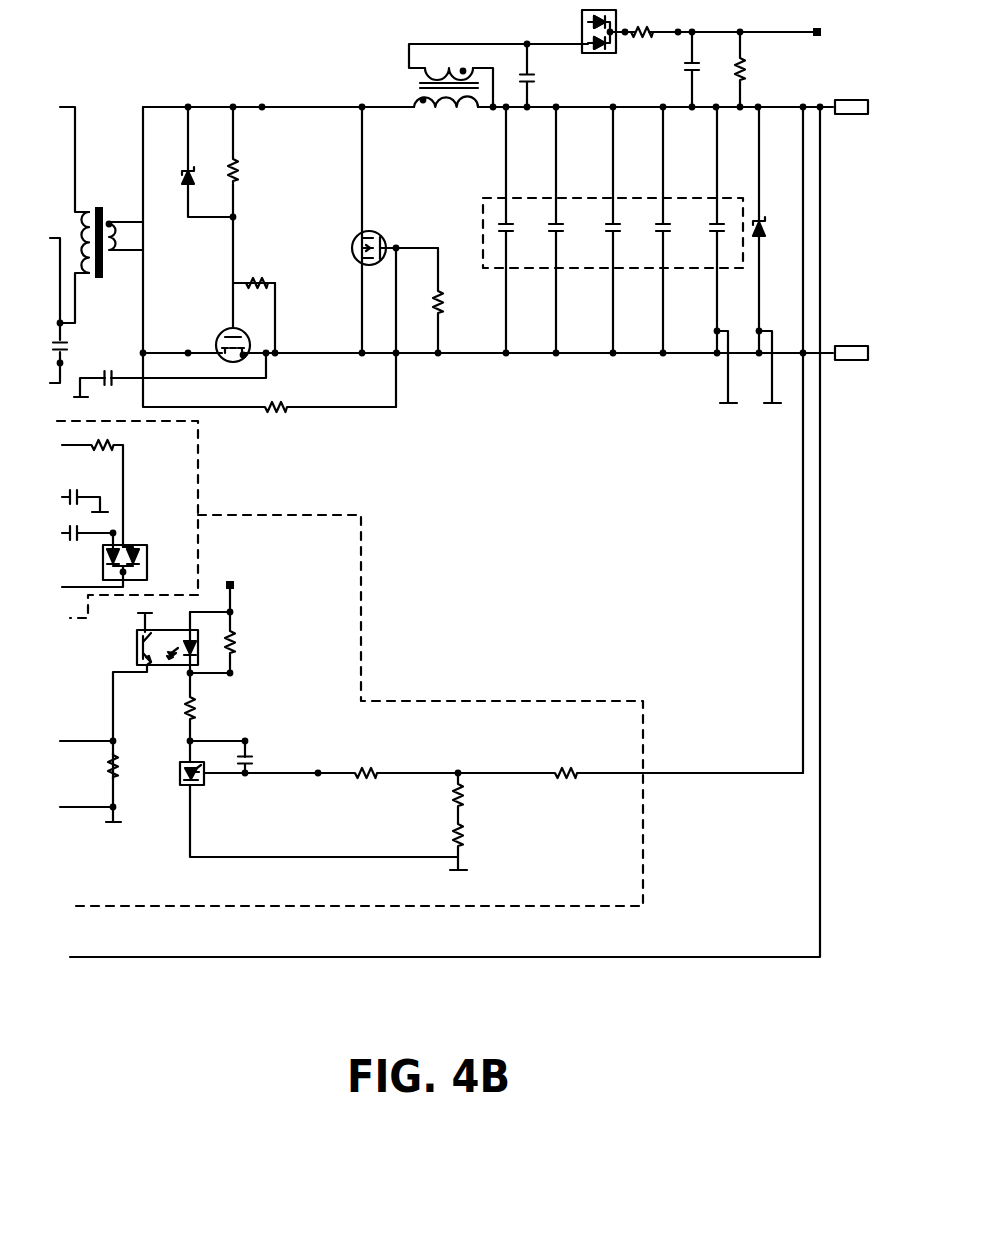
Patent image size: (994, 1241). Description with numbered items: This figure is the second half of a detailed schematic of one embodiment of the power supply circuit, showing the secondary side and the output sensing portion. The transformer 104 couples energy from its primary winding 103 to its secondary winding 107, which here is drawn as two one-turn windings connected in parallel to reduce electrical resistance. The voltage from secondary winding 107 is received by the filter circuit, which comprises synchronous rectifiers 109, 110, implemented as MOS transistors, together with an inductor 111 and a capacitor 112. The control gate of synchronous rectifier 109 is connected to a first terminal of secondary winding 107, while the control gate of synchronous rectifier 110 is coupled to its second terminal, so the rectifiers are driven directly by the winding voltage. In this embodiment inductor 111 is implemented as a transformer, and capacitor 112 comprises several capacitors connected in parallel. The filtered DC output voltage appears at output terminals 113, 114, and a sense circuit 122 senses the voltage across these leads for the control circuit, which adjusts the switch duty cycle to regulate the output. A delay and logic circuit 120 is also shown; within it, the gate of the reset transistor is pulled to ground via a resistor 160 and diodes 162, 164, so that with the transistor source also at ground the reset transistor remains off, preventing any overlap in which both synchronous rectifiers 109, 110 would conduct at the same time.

The primary winding 103 is at (80, 213).
The transformer 104 is at (104, 274).
The secondary winding 107 is at (143, 236).
The synchronous rectifier 109 is at (233, 363).
The synchronous rectifier 110 is at (352, 249).
The inductor 111 is at (452, 109).
The capacitor 112 is at (595, 198).
The output terminal 113 is at (823, 106).
The output terminal 114 is at (823, 352).
The delay and logic circuit 120 is at (185, 457).
The sense circuit 122 is at (284, 515).
The resistor 160 is at (97, 447).
The diode 162 is at (124, 533).
The diode 164 is at (134, 546).